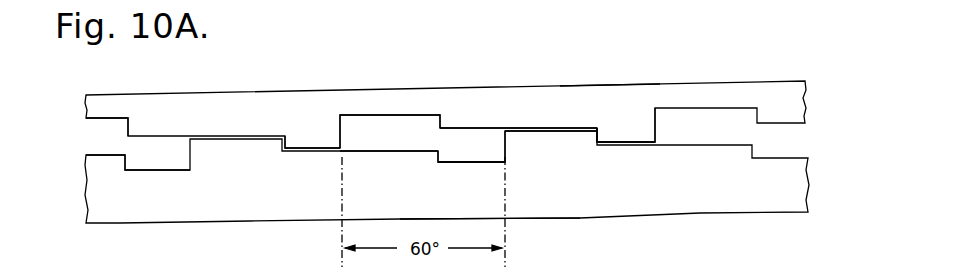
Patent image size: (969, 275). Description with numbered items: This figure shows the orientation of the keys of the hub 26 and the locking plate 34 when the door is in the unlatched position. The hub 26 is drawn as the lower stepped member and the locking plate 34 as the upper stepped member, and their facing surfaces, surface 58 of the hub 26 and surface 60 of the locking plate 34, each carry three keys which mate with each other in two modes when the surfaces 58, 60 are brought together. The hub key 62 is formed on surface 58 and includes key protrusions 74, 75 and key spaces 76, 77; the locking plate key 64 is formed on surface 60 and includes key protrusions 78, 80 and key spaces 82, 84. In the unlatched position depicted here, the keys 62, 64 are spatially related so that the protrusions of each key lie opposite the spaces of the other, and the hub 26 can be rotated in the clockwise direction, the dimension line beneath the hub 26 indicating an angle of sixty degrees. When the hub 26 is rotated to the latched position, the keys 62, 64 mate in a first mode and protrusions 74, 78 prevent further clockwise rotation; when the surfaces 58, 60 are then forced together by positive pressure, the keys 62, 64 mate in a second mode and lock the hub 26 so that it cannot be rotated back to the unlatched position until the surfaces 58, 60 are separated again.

The locking plate 34 is at (698, 83).
The hub 26 is at (681, 199).
The surface of locking plate 60 is at (88, 121).
The surface of hub 58 is at (86, 155).
The key protrusion 78 is at (305, 143).
The key space 84 is at (393, 124).
The key space 82 is at (463, 133).
The key protrusion 74 is at (519, 137).
The key protrusion 80 is at (553, 120).
The locking plate key 64 is at (573, 117).
The key space 76 is at (488, 155).
The hub key 62 is at (460, 182).
The key space 77 is at (365, 145).
The key protrusion 75 is at (415, 160).